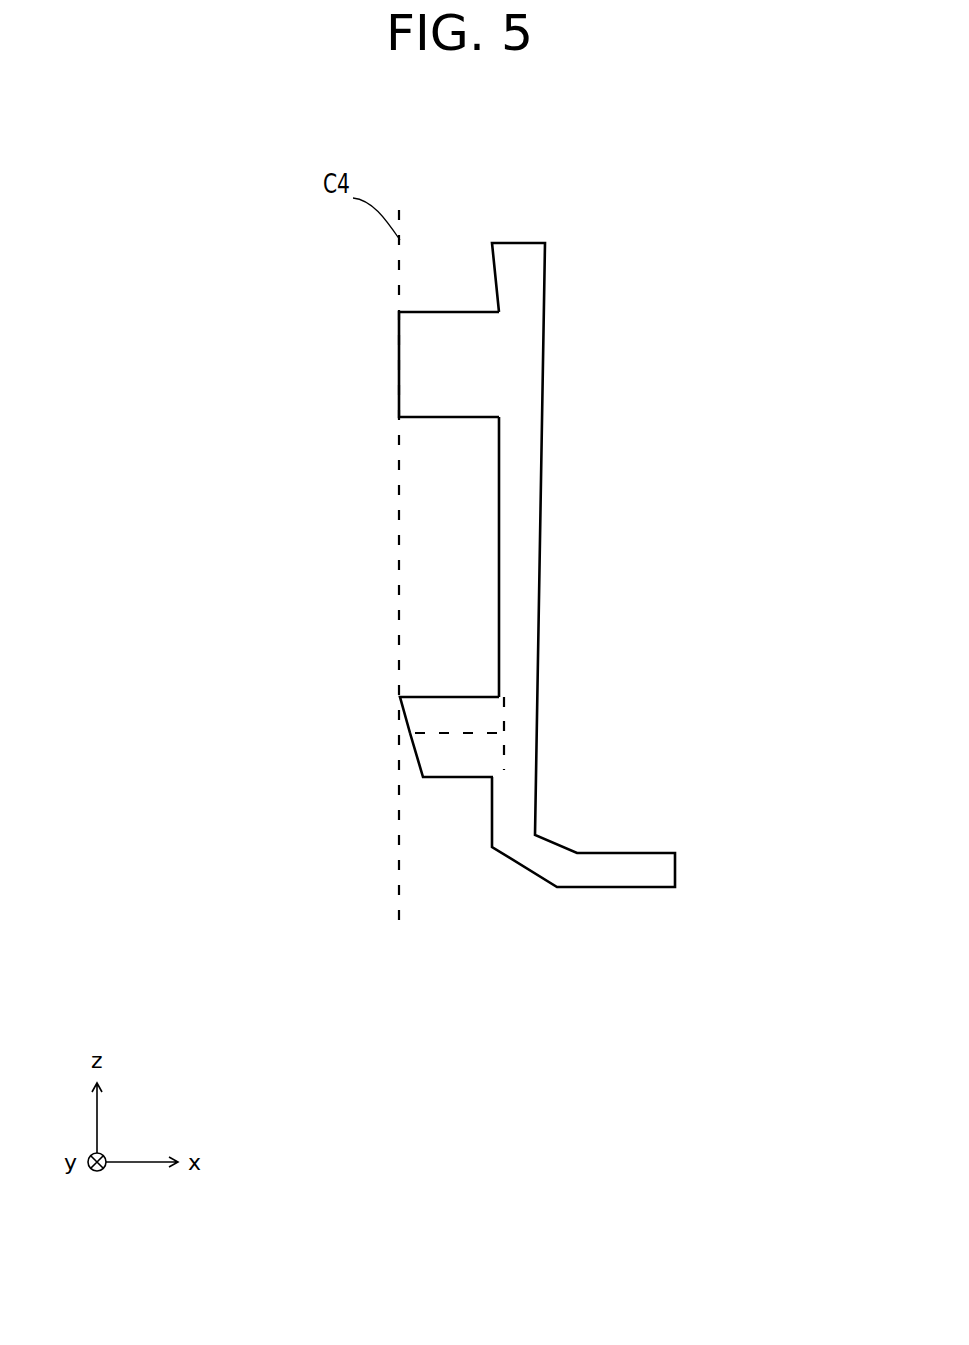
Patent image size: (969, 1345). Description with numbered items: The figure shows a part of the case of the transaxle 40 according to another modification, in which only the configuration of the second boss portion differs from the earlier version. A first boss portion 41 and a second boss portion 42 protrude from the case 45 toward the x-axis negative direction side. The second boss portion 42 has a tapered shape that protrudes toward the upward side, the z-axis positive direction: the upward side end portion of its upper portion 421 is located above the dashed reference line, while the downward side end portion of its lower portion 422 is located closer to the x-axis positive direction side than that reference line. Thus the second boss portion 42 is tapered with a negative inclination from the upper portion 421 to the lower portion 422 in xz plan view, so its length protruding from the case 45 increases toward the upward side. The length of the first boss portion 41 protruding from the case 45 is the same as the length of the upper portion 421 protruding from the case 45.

The transaxle 40 is at (588, 218).
The first boss portion 41 is at (417, 370).
The second boss portion 42 is at (388, 720).
The upper portion 421 is at (460, 713).
The lower portion 422 is at (467, 755).
The case 45 is at (523, 467).